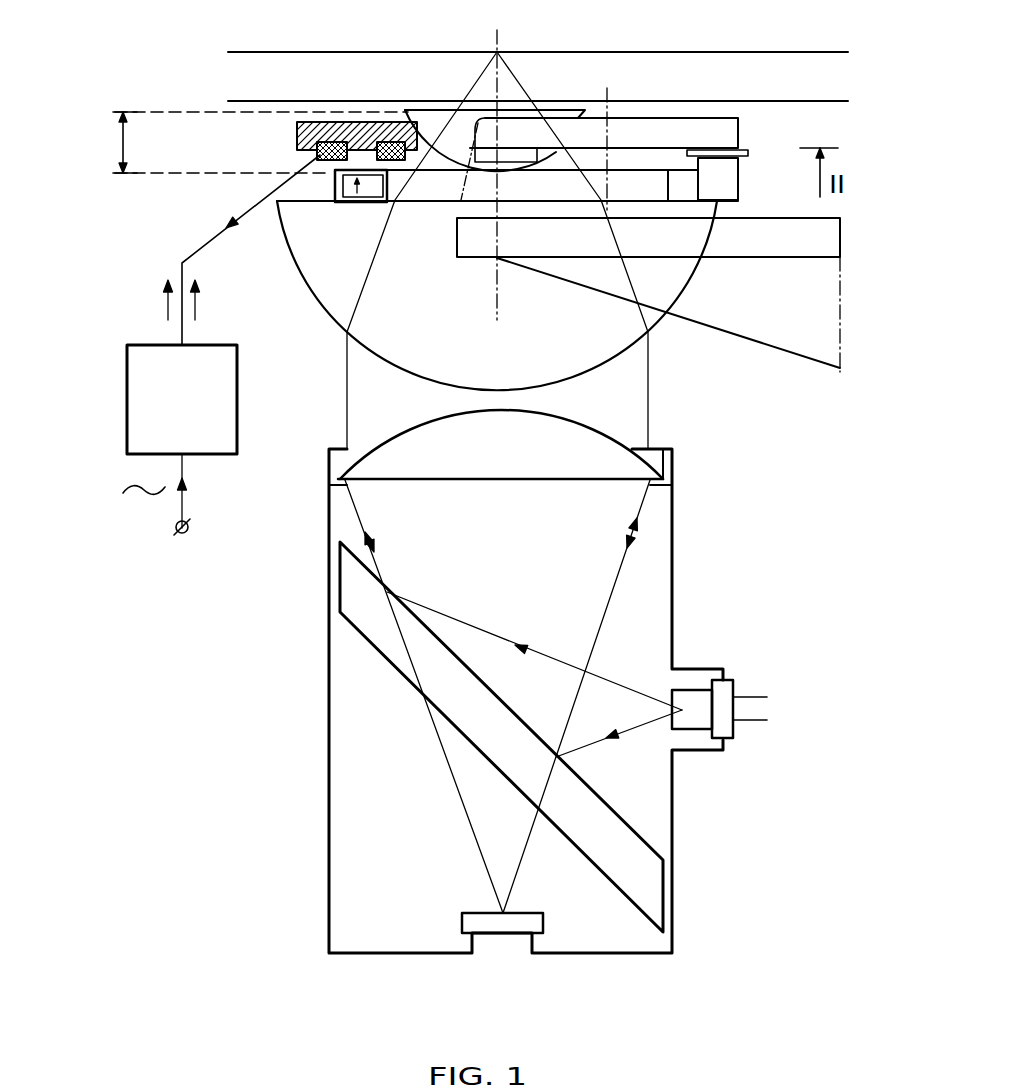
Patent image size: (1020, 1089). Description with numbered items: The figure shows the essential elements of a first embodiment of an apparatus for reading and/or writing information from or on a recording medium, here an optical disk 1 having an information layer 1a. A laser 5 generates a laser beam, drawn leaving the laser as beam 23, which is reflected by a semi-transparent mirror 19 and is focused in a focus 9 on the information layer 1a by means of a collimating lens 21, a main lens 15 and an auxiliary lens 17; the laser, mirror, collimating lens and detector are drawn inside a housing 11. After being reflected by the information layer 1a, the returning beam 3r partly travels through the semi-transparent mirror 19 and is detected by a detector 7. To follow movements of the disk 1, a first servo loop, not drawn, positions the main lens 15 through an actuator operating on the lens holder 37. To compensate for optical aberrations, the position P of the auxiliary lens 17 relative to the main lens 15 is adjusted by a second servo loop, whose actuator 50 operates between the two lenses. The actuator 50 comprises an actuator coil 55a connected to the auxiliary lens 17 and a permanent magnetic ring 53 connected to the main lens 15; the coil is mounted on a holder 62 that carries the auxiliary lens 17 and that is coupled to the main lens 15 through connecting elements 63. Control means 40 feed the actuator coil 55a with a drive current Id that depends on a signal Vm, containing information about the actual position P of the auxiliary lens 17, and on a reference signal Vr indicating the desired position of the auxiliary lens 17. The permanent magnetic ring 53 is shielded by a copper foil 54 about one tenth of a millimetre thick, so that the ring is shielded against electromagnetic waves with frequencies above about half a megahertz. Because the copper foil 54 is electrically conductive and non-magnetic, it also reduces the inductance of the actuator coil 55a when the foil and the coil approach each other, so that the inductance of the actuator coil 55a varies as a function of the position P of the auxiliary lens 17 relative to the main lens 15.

The optical disk 1 is at (718, 60).
The information layer 1a is at (622, 52).
The focus 9 is at (497, 52).
The position of the auxiliary lens P is at (115, 142).
The actuator 50 is at (262, 152).
The actuator coil 55a is at (337, 140).
The copper foil 54 is at (337, 185).
The permanent magnetic ring 53 is at (352, 203).
The auxiliary lens 17 is at (425, 110).
The holder 62 is at (712, 130).
The connecting elements 63 is at (738, 183).
The main lens 15 is at (335, 310).
The lens holder 37 is at (740, 325).
The reflected radiation beam 3r is at (472, 826).
The control means 40 is at (135, 397).
The housing 11 is at (672, 552).
The collimating lens 21 is at (625, 465).
The semi-transparent mirror 19 is at (660, 895).
The laser 5 is at (726, 692).
The radiation beam 23 is at (628, 688).
The detector 7 is at (525, 935).